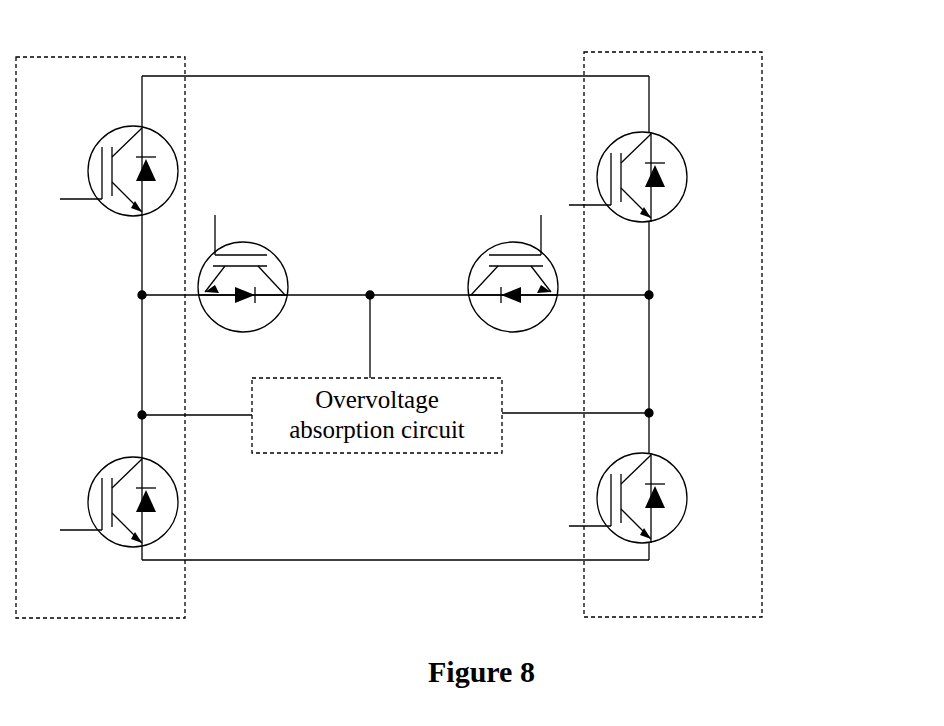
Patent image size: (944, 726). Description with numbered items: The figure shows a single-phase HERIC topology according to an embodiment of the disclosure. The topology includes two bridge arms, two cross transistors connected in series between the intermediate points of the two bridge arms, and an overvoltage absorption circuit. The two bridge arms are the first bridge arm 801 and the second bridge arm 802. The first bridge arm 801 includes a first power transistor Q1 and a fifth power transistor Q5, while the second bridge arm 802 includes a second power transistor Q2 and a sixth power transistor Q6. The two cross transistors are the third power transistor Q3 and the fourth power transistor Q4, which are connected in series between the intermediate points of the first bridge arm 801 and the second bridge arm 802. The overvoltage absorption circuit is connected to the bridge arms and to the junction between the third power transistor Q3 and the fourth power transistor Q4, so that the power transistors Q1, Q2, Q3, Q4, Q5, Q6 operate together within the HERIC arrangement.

The first bridge arm 801 is at (181, 337).
The second bridge arm 802 is at (716, 334).
The first power transistor Q1 is at (101, 175).
The second power transistor Q2 is at (660, 175).
The third power transistor Q3 is at (255, 266).
The fourth power transistor Q4 is at (510, 261).
The fifth power transistor Q5 is at (102, 513).
The sixth power transistor Q6 is at (629, 508).